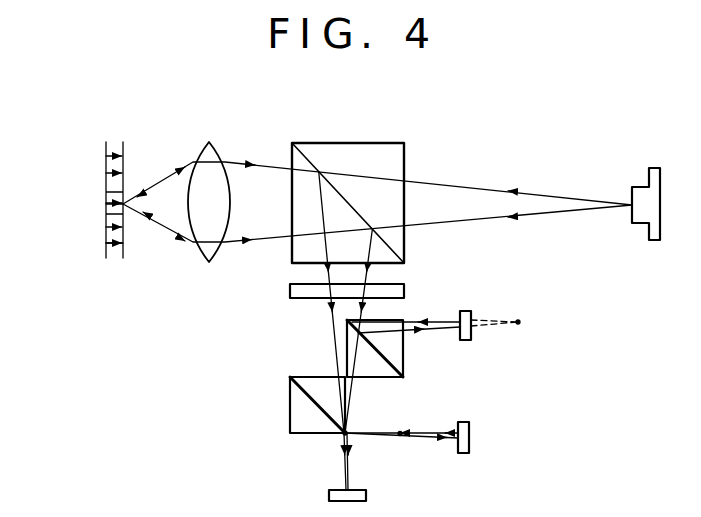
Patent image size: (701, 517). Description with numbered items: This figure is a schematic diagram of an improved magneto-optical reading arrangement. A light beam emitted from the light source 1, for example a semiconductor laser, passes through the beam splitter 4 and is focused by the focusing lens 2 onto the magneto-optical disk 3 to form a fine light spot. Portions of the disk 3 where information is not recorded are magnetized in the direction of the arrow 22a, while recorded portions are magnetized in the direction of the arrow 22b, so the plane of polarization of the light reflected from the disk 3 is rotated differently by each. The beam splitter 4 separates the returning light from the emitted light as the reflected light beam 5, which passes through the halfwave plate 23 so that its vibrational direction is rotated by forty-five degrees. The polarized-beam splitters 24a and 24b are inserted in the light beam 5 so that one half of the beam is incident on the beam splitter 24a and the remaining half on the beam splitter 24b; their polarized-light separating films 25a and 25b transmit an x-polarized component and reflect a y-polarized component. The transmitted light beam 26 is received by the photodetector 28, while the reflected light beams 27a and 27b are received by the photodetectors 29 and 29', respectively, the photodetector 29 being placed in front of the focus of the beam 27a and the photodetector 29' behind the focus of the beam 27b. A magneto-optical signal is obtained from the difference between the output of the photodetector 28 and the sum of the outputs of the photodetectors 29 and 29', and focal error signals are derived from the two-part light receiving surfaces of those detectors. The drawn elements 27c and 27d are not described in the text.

The light source 1 is at (655, 168).
The focusing lens 2 is at (211, 143).
The magneto-optical disk 3 is at (123, 152).
The beam splitter 4 is at (388, 143).
The reflected light beam 5 is at (325, 277).
The arrow 22a is at (116, 246).
The arrow 22b is at (113, 204).
The halfwave plate 23 is at (405, 284).
The polarized-beam splitter 24a is at (380, 378).
The polarized-beam splitter 24b is at (290, 415).
The polarized-light separating film 25a is at (392, 350).
The polarized-light separating film 25b is at (315, 388).
The transmitted light beam 26 is at (343, 444).
The reflected light beam 27a is at (443, 322).
The reflected light beam 27b is at (367, 434).
The light beam 27c is at (518, 322).
The light beam 27d is at (400, 434).
The photodetector 28 is at (329, 495).
The photodetector 29 is at (498, 342).
The photodetector 29' is at (498, 427).